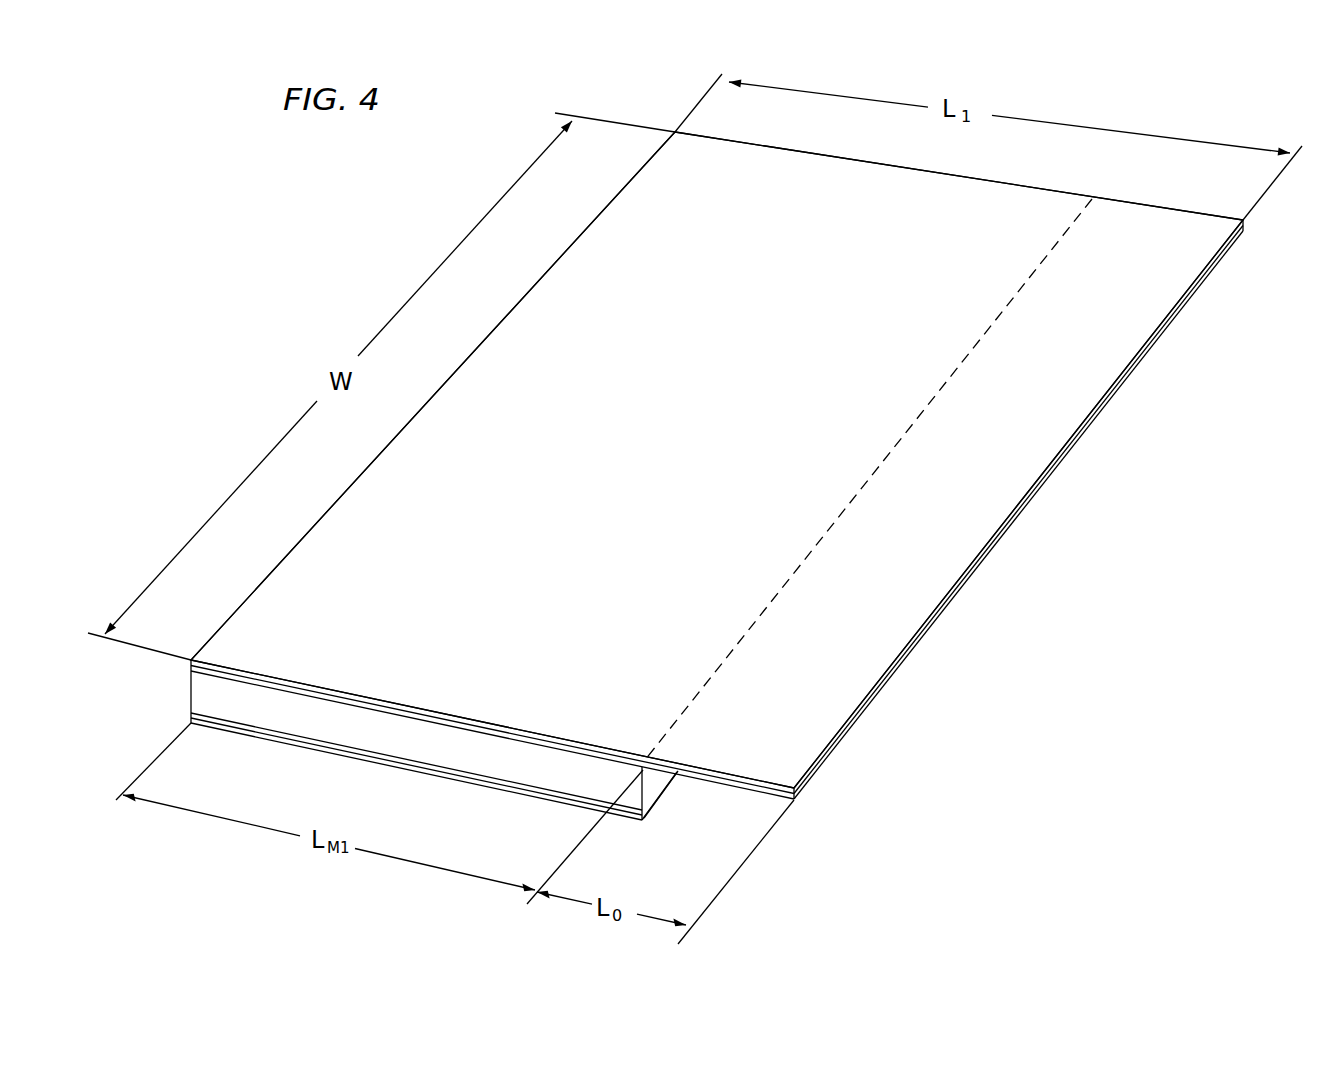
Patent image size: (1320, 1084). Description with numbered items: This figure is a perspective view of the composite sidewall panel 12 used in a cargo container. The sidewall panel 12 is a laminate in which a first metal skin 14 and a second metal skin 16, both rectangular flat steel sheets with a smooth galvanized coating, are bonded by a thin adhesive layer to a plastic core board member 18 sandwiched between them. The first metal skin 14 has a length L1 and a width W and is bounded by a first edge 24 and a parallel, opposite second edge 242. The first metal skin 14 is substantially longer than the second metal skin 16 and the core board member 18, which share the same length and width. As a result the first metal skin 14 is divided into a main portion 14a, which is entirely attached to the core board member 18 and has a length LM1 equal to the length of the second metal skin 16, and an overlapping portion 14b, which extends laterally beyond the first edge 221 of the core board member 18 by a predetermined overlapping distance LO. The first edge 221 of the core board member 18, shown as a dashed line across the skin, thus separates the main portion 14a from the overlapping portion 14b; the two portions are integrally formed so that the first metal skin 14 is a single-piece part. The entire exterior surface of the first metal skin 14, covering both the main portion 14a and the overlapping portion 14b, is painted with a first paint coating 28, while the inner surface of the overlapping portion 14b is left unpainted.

The sidewall panel 12 is at (467, 219).
The first metal skin 14 is at (1160, 353).
The main portion 14a is at (212, 667).
The overlapping portion 14b is at (892, 678).
The second metal skin 16 is at (327, 761).
The core board member 18 is at (438, 758).
The first edge of the core board member 221 is at (1066, 234).
The first edge of the first metal skin 24 is at (833, 748).
The second edge of the first metal skin 242 is at (255, 587).
The first paint coating 28 is at (927, 597).